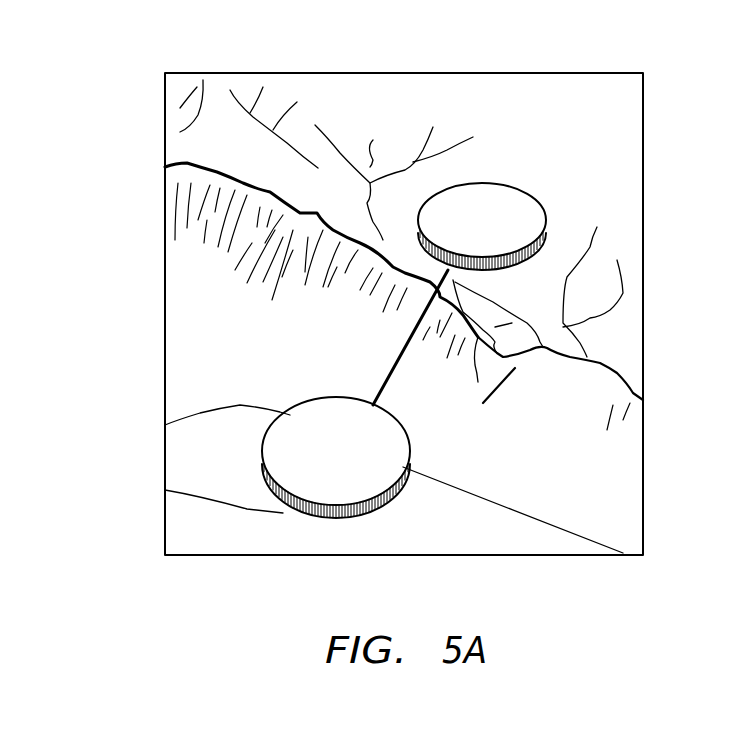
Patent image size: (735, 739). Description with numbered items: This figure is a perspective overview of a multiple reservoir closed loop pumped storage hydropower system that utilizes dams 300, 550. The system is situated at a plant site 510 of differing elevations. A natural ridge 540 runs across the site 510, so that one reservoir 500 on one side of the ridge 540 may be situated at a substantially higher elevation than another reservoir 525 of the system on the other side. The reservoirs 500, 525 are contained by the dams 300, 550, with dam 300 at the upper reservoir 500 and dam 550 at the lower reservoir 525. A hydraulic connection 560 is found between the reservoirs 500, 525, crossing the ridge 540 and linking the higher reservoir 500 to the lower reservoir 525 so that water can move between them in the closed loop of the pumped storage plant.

The plant site 510 is at (370, 116).
The natural ridge 540 is at (217, 172).
The dam 300 is at (565, 226).
The reservoir 500 is at (503, 231).
The reservoir 525 is at (357, 469).
The dam 550 is at (165, 490).
The hydraulic connection 560 is at (400, 357).